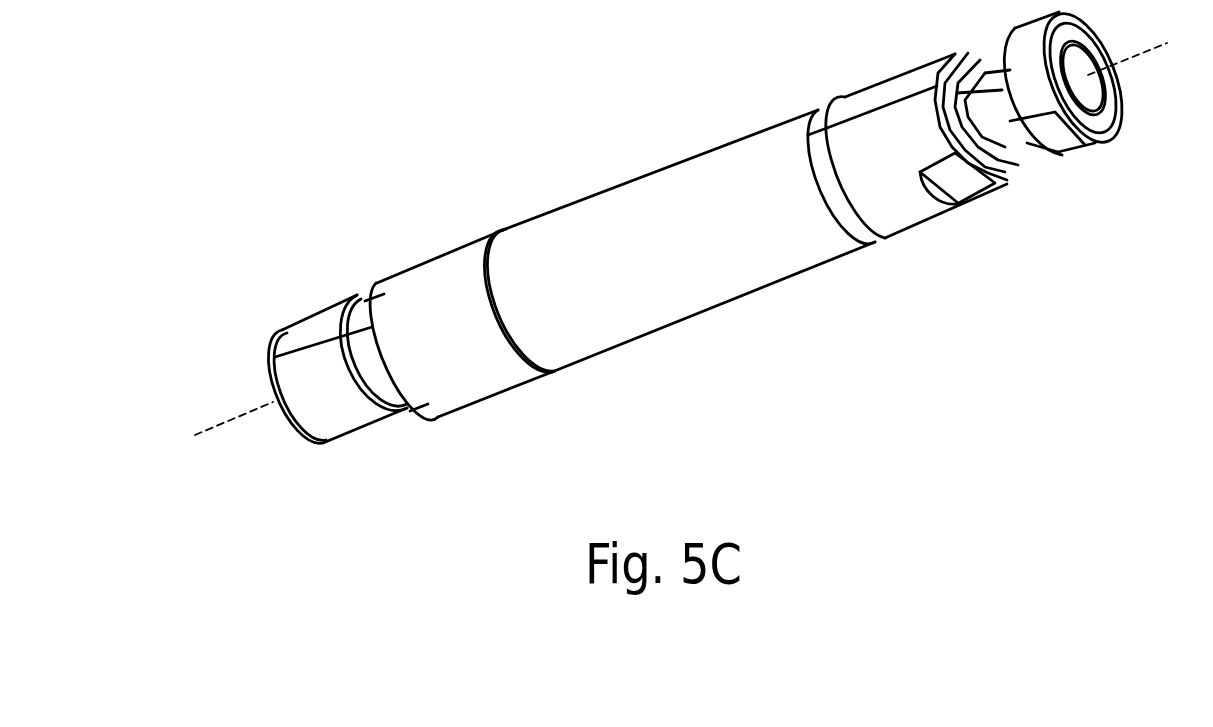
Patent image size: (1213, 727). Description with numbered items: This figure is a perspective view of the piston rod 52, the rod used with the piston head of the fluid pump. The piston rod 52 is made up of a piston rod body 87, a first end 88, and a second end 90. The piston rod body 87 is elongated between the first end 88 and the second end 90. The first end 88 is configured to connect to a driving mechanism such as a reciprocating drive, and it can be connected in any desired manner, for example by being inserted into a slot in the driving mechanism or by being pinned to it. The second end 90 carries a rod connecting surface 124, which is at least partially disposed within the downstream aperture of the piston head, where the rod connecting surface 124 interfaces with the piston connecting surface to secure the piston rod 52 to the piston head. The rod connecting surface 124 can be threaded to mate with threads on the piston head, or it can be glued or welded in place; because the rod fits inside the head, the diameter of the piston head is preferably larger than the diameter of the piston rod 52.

The piston rod 52 is at (686, 228).
The piston rod body 87 is at (693, 203).
The first end 88 is at (963, 173).
The second end 90 is at (438, 287).
The rod connecting surface 124 is at (305, 327).